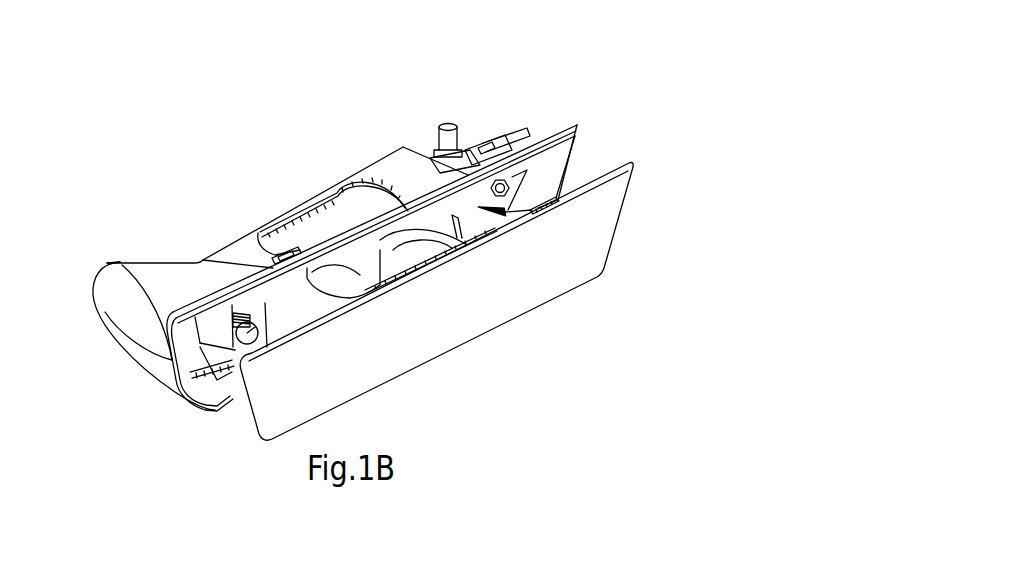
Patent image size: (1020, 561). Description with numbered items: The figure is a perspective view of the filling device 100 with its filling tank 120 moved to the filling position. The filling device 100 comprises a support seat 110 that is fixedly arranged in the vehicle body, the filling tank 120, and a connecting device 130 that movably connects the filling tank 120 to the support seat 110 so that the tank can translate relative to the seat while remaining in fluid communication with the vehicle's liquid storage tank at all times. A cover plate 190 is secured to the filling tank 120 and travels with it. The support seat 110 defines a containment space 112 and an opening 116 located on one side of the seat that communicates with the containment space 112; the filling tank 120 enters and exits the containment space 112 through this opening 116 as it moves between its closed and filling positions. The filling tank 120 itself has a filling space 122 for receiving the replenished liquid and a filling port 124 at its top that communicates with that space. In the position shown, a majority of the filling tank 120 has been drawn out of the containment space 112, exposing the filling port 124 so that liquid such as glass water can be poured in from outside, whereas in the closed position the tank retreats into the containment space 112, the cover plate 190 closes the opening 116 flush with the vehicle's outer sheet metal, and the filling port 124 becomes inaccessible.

The filling device 100 is at (701, 141).
The support seat 110 is at (373, 175).
The containment space 112 is at (560, 203).
The opening 116 is at (512, 177).
The filling tank 120 is at (277, 258).
The filling space 122 is at (352, 253).
The filling port 124 is at (408, 255).
The connecting device 130 is at (238, 340).
The cover plate 190 is at (513, 297).